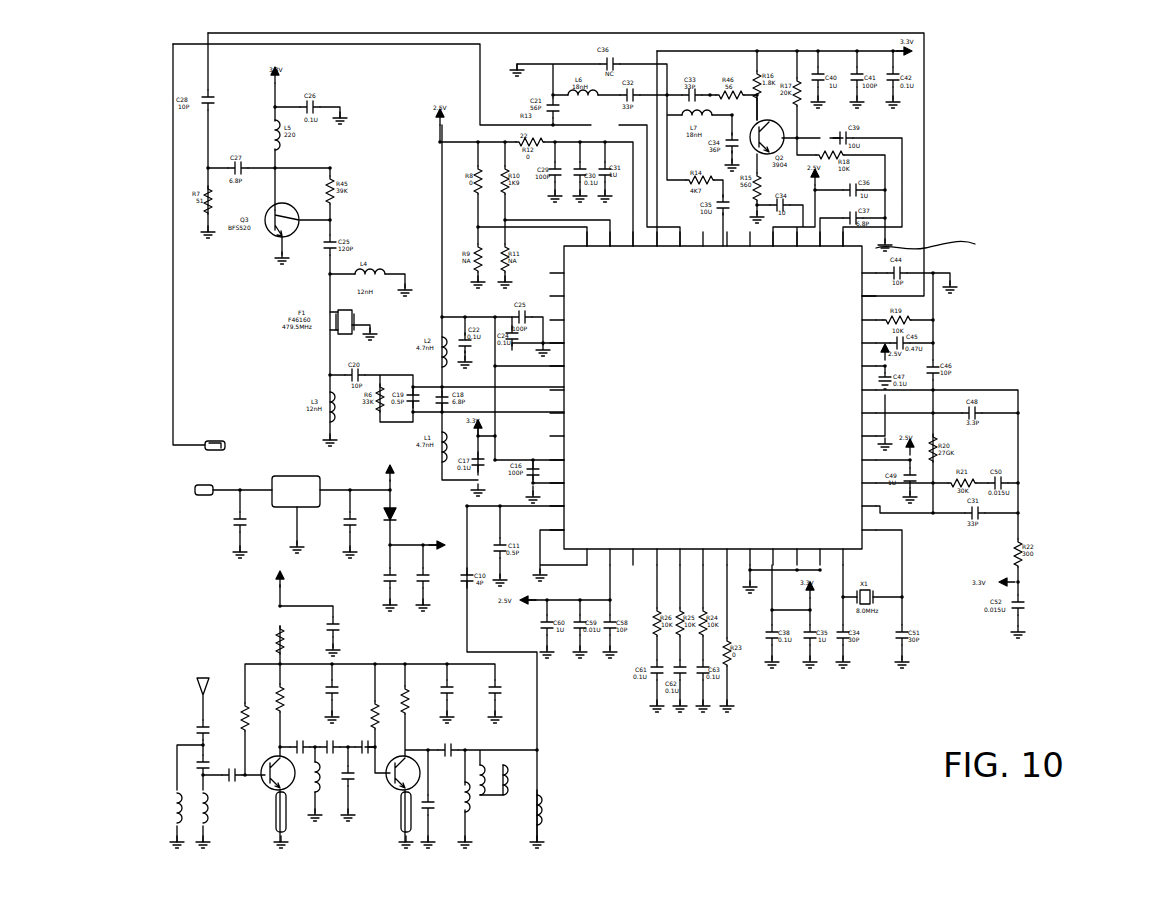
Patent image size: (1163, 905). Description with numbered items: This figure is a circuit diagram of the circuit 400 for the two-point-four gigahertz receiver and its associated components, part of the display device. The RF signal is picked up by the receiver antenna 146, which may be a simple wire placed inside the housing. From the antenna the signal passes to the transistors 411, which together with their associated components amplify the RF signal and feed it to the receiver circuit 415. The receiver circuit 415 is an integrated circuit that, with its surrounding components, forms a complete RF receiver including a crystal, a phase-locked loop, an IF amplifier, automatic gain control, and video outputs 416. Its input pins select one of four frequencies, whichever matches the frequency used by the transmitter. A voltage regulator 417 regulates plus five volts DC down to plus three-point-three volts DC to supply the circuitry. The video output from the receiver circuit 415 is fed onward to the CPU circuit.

The circuit 400 is at (1050, 432).
The receiver circuit 415 is at (975, 244).
The video outputs 416 is at (213, 441).
The voltage regulator 417 is at (313, 479).
The receiver antenna 146 is at (203, 657).
The transistors 411 is at (290, 783).